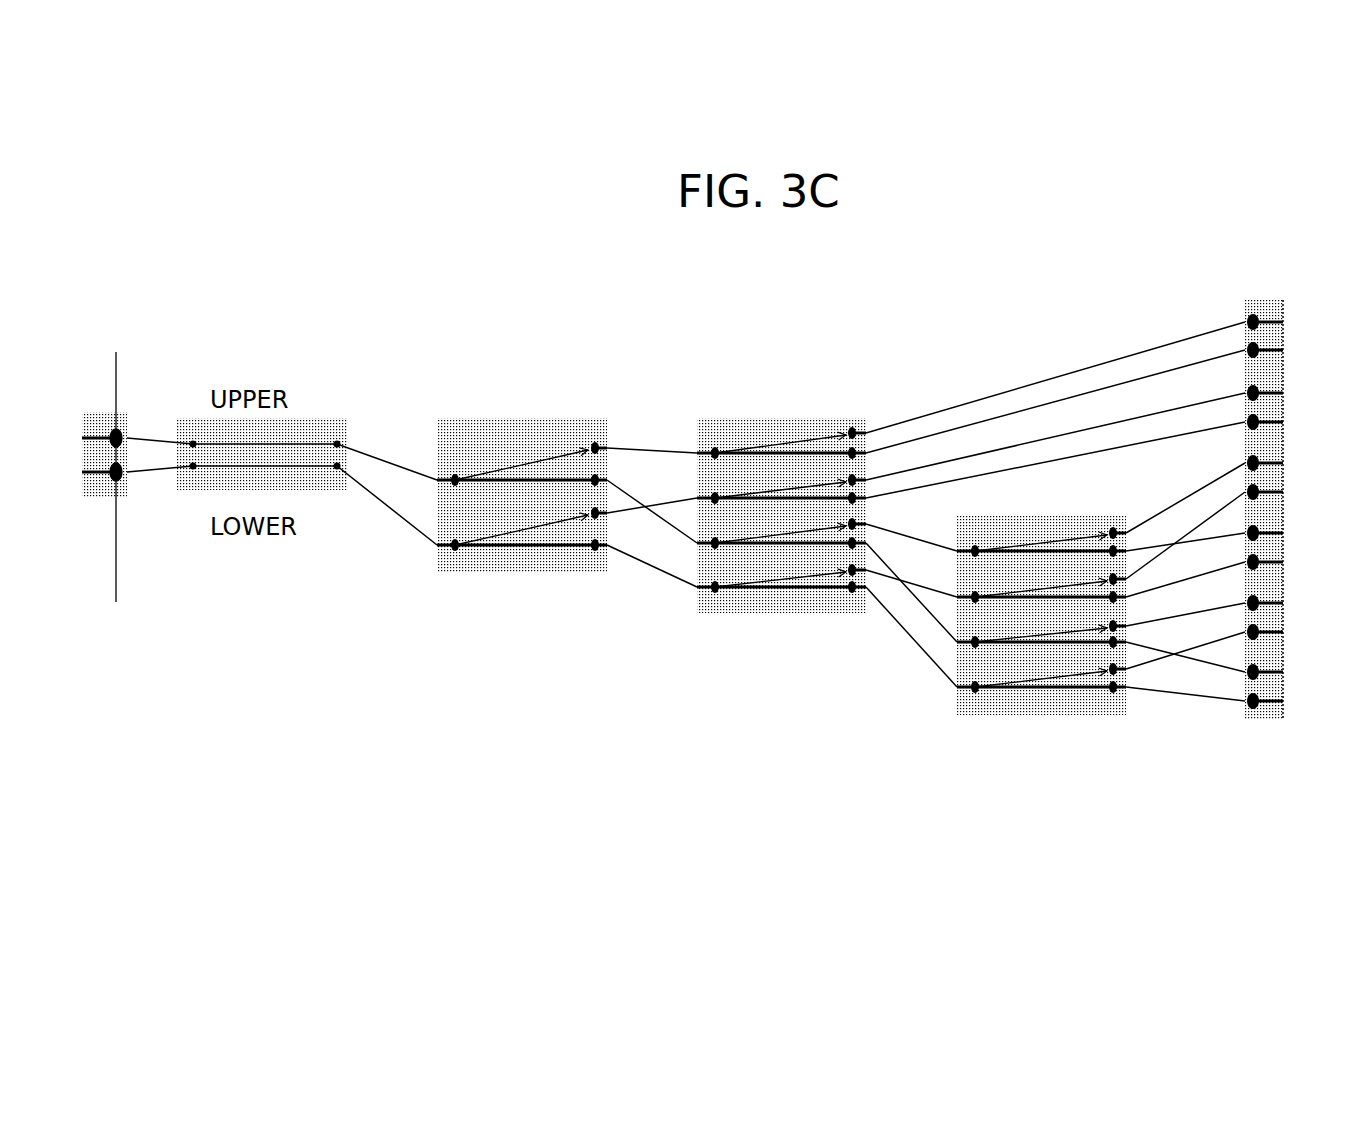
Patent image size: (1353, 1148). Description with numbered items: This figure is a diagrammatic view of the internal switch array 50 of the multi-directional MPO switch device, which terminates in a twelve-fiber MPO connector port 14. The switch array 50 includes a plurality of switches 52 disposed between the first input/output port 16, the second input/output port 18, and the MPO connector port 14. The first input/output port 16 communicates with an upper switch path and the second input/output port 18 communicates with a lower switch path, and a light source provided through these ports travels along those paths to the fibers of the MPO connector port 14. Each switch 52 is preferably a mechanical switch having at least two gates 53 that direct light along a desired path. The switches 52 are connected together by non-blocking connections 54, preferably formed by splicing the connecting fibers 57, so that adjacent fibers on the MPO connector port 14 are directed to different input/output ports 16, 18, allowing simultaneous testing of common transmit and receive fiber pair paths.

The MPO connector port 14 is at (1243, 303).
The first input/output port 16 is at (109, 380).
The second input/output port 18 is at (103, 557).
The switch array 50 is at (465, 502).
The switches 52 is at (724, 520).
The gates 53 is at (455, 482).
The non-blocking connections 54 is at (1150, 497).
The connecting fibers 57 is at (1095, 373).